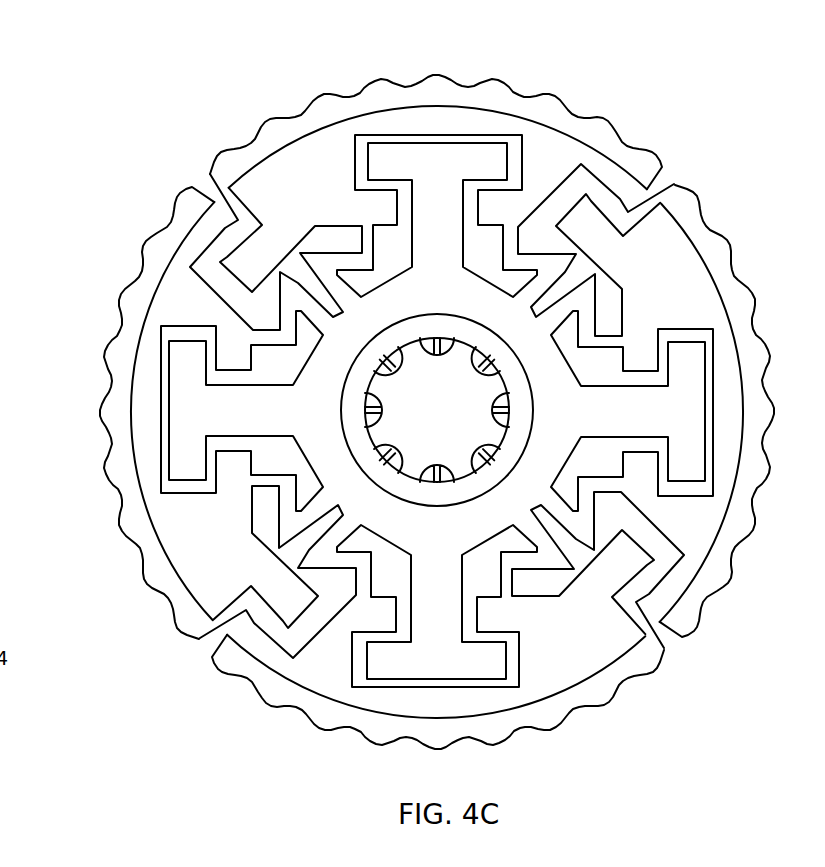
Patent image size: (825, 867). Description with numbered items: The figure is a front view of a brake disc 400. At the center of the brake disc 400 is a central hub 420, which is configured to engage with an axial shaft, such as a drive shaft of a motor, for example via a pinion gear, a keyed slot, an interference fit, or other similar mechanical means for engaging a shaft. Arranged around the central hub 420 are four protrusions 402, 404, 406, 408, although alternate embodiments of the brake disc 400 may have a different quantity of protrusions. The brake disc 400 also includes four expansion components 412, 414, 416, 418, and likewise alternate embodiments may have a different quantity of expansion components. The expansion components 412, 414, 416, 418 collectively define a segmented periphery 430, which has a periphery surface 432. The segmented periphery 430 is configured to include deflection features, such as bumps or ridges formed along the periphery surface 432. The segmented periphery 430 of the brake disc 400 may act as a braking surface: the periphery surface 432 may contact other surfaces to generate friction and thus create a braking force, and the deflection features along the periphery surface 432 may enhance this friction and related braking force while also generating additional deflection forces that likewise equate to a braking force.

The brake disc 400 is at (669, 91).
The protrusion 402 is at (658, 404).
The protrusion 404 is at (447, 652).
The protrusion 406 is at (220, 408).
The protrusion 408 is at (438, 200).
The expansion component 412 is at (650, 272).
The expansion component 414 is at (558, 632).
The expansion component 416 is at (233, 494).
The expansion component 418 is at (307, 200).
The central hub 420 is at (348, 442).
The segmented periphery 430 is at (440, 72).
The periphery surface 432 is at (3, 740).